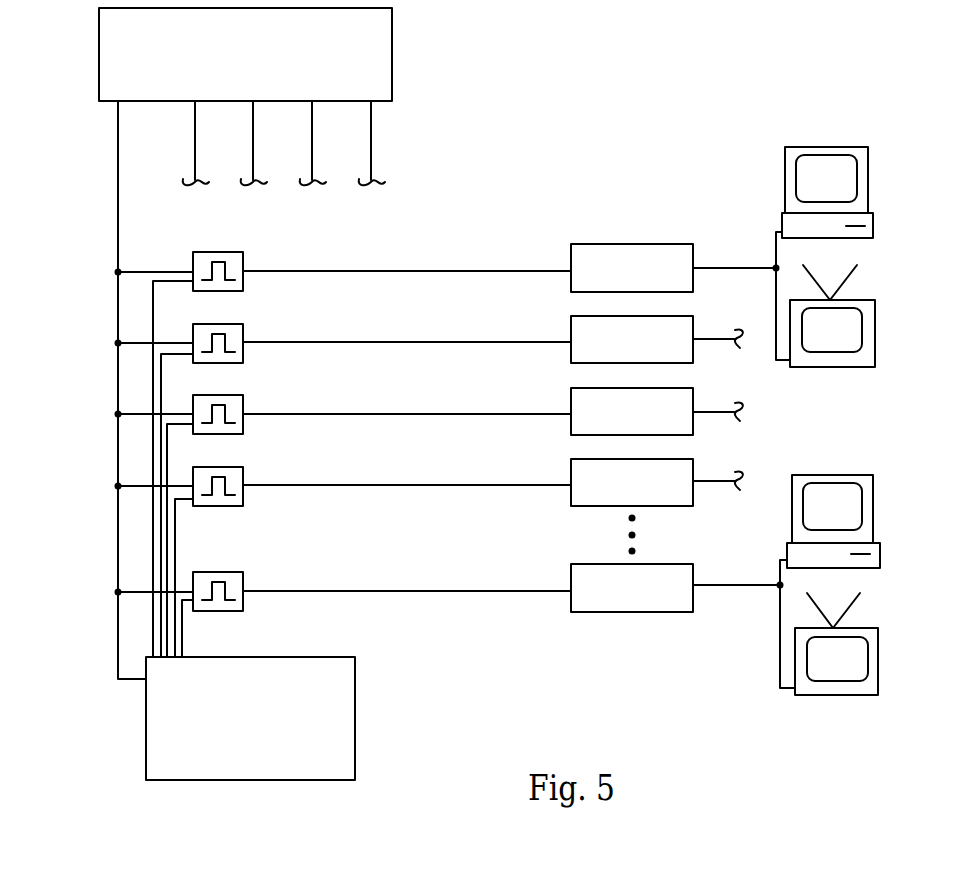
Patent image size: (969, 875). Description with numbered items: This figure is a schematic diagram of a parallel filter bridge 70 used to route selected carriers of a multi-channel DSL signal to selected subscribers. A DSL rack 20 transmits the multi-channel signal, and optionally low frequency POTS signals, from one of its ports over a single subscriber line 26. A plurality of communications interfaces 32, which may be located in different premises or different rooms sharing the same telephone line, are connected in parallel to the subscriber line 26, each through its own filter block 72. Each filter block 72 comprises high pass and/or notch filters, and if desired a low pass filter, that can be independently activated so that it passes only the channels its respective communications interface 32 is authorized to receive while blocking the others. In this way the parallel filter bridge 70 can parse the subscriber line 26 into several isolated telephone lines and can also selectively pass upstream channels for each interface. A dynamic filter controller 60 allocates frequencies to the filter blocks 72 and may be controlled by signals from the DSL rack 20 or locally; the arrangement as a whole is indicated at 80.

The DSL rack 20 is at (392, 58).
The subscriber line 26 is at (195, 147).
The communications interface 32 is at (693, 326).
The dynamic filter controller 60 is at (143, 737).
The parallel filter bridge 70 is at (254, 255).
The filter block 72 is at (243, 280).
The dynamic filtering system 80 is at (97, 318).